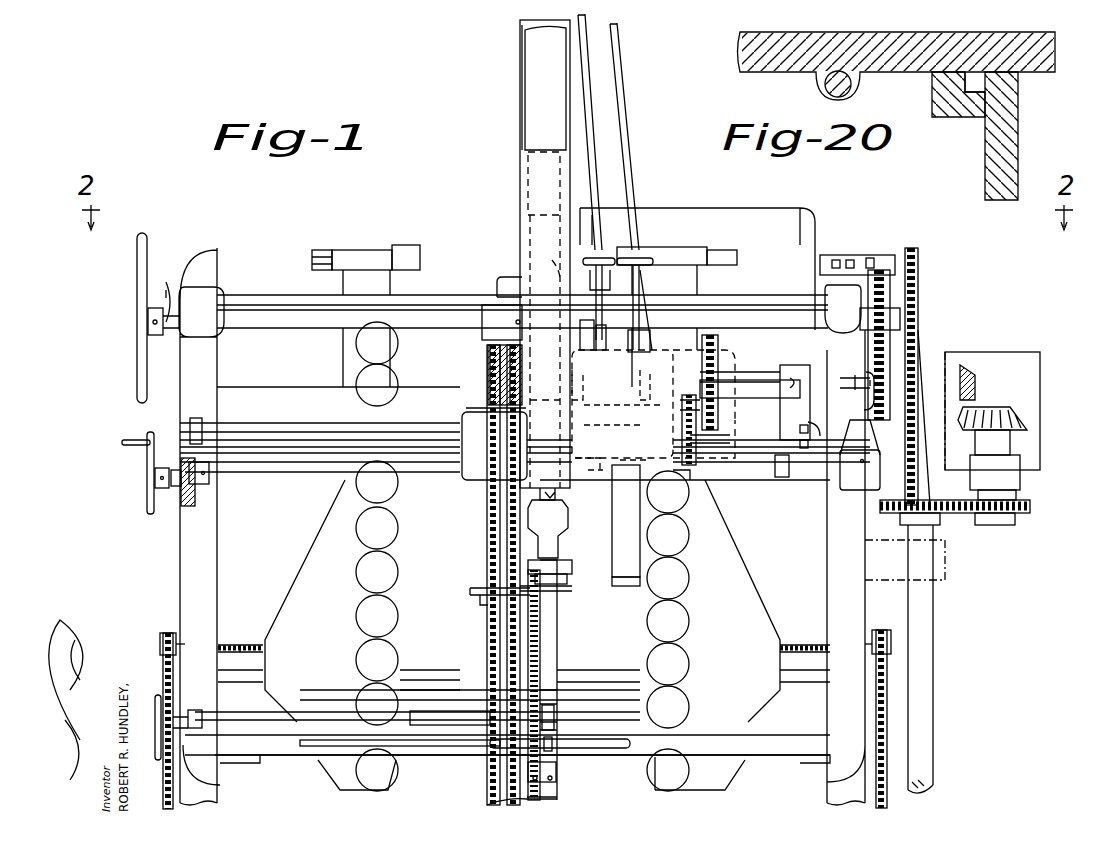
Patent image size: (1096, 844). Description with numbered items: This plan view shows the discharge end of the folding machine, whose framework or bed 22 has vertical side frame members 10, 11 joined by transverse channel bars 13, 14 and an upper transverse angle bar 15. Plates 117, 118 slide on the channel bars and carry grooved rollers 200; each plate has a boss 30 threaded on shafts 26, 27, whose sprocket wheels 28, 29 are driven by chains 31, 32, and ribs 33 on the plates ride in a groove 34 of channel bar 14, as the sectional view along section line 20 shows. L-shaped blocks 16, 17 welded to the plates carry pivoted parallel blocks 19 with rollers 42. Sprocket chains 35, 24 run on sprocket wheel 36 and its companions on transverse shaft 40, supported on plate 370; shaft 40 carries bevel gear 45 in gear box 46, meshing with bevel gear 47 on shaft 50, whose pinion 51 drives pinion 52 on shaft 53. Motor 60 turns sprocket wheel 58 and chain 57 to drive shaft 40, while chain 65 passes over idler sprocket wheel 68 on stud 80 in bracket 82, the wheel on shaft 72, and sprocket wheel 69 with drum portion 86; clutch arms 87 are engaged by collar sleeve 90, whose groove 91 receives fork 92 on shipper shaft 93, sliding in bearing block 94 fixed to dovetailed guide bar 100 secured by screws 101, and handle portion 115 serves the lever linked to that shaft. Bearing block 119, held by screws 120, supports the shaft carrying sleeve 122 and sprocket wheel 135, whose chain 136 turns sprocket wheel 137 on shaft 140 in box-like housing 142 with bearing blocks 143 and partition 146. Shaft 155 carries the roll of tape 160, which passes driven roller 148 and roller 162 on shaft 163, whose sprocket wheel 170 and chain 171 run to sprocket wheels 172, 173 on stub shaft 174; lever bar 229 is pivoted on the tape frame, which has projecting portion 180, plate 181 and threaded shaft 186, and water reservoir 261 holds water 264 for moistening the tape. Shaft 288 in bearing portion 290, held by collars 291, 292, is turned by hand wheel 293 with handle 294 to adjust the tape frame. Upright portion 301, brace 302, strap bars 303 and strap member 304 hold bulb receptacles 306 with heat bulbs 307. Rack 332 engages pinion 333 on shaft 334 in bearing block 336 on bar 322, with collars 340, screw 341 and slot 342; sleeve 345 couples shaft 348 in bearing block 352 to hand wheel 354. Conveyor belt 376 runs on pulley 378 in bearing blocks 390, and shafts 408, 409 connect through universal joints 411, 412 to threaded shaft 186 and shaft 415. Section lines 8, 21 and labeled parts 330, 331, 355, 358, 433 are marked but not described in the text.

In FIG. 1, the section line 8 is at (324, 602).
In FIG. 1, the right frame member 10 is at (868, 616).
In FIG. 1, the left frame member 11 is at (180, 564).
In FIG. 1, the section line 13 is at (402, 488).
In FIG. 1, the guide bar 14 is at (594, 668).
In FIG. 20, the guide bar 14 is at (1018, 118).
In FIG. 1, the bottom rail 15 is at (756, 760).
In FIG. 1, the bracket 16 is at (727, 250).
In FIG. 1, the bearing block 17 is at (315, 250).
In FIG. 1, the support bar 19 is at (360, 251).
In FIG. 1, the section line 20 is at (751, 611).
In FIG. 1, the section line 21 is at (773, 328).
In FIG. 1, the side plate 22 is at (820, 580).
In FIG. 1, the rack 24 is at (488, 340).
In FIG. 1, the roller 26 is at (798, 643).
In FIG. 20, the roller 26 is at (837, 76).
In FIG. 1, the rack bar 27 is at (238, 645).
In FIG. 1, the chain 28 is at (884, 636).
In FIG. 1, the chain 29 is at (158, 640).
In FIG. 20, the roller seat 30 is at (816, 98).
In FIG. 1, the chain 31 is at (887, 737).
In FIG. 1, the chain 32 is at (158, 792).
In FIG. 20, the groove 33 is at (987, 82).
In FIG. 1, the guide block 34 is at (420, 670).
In FIG. 20, the guide block 34 is at (970, 92).
In FIG. 1, the rack teeth 35 is at (510, 348).
In FIG. 1, the rack 36 is at (484, 362).
In FIG. 1, the shaft 40 is at (450, 384).
In FIG. 1, the block 42 is at (398, 246).
In FIG. 1, the bevel pinion 45 is at (972, 373).
In FIG. 1, the gear housing 46 is at (1040, 359).
In FIG. 1, the bevel gear 47 is at (994, 410).
In FIG. 1, the bearing 50 is at (1008, 466).
In FIG. 1, the hub 51 is at (1012, 516).
In FIG. 1, the gear 52 is at (904, 498).
In FIG. 1, the drive shaft 53 is at (932, 604).
In FIG. 1, the bracket 57 is at (899, 318).
In FIG. 1, the bearing housing 58 is at (867, 303).
In FIG. 1, the housing 60 is at (742, 208).
In FIG. 1, the chain 65 is at (918, 251).
In FIG. 1, the sprocket 68 is at (878, 260).
In FIG. 1, the chain run 69 is at (925, 339).
In FIG. 1, the cross bar 72 is at (300, 326).
In FIG. 1, the stop 80 is at (872, 256).
In FIG. 1, the bracket 82 is at (848, 256).
In FIG. 1, the link 86 is at (897, 453).
In FIG. 1, the arm 87 is at (860, 433).
In FIG. 1, the coupling 90 is at (854, 382).
In FIG. 1, the coupling 91 is at (866, 370).
In FIG. 1, the arm 92 is at (862, 400).
In FIG. 1, the bracket 93 is at (840, 478).
In FIG. 1, the collar 94 is at (790, 464).
In FIG. 1, the shaft 100 is at (262, 422).
In FIG. 1, the bearing 101 is at (197, 424).
In FIG. 1, the block 115 is at (664, 316).
In FIG. 1, the side plate 117 is at (736, 552).
In FIG. 20, the side plate 117 is at (1048, 50).
In FIG. 1, the side plate 118 is at (313, 544).
In FIG. 1, the block 119 is at (808, 402).
In FIG. 1, the bracket 120 is at (800, 438).
In FIG. 1, the shaft 122 is at (785, 370).
In FIG. 1, the sprocket 135 is at (716, 366).
In FIG. 1, the shaft 136 is at (750, 386).
In FIG. 1, the collar 137 is at (716, 410).
In FIG. 1, the slot 140 is at (622, 422).
In FIG. 1, the column 142 is at (526, 160).
In FIG. 1, the pin 143 is at (594, 402).
In FIG. 1, the carriage 146 is at (564, 146).
In FIG. 1, the slide 148 is at (545, 419).
In FIG. 1, the guide 155 is at (545, 282).
In FIG. 1, the pin 160 is at (556, 494).
In FIG. 1, the head 162 is at (530, 462).
In FIG. 1, the arm 163 is at (604, 460).
In FIG. 1, the roller 170 is at (689, 472).
In FIG. 1, the bracket 171 is at (692, 482).
In FIG. 1, the pin 172 is at (678, 450).
In FIG. 1, the shaft 173 is at (707, 437).
In FIG. 1, the sprocket 174 is at (678, 432).
In FIG. 1, the block 180 is at (626, 342).
In FIG. 1, the pin 181 is at (644, 342).
In FIG. 1, the lever 186 is at (648, 275).
In FIG. 1, the roller 200 is at (403, 355).
In FIG. 1, the block 229 is at (597, 341).
In FIG. 1, the pin 261 is at (466, 487).
In FIG. 1, the link 264 is at (479, 493).
In FIG. 1, the shaft 288 is at (329, 478).
In FIG. 1, the bearing 290 is at (194, 487).
In FIG. 1, the collar 291 is at (210, 484).
In FIG. 1, the collar 292 is at (167, 488).
In FIG. 1, the handwheel 293 is at (147, 492).
In FIG. 1, the handle 294 is at (130, 445).
In FIG. 1, the base 301 is at (627, 588).
In FIG. 1, the post 302 is at (620, 532).
In FIG. 1, the plate 303 is at (570, 572).
In FIG. 1, the plate 304 is at (564, 586).
In FIG. 1, the base 306 is at (568, 560).
In FIG. 1, the knob 307 is at (574, 526).
In FIG. 1, the guide 322 is at (556, 660).
In FIG. 1, the block 330 is at (556, 770).
In FIG. 1, the plate 331 is at (558, 794).
In FIG. 1, the rack 332 is at (544, 632).
In FIG. 1, the pin 333 is at (552, 697).
In FIG. 1, the rod 334 is at (400, 741).
In FIG. 1, the block 336 is at (556, 707).
In FIG. 1, the pin 340 is at (556, 724).
In FIG. 1, the rod 341 is at (584, 741).
In FIG. 1, the link 342 is at (500, 745).
In FIG. 1, the sleeve 345 is at (436, 703).
In FIG. 1, the rod 348 is at (285, 716).
In FIG. 1, the collar 352 is at (196, 712).
In FIG. 1, the lever 354 is at (155, 712).
In FIG. 1, the arm 355 is at (470, 591).
In FIG. 1, the hook 358 is at (480, 595).
In FIG. 1, the chain 370 is at (488, 525).
In FIG. 1, the cover 376 is at (526, 46).
In FIG. 1, the block 378 is at (509, 287).
In FIG. 1, the slide 390 is at (482, 318).
In FIG. 1, the rod 408 is at (592, 150).
In FIG. 1, the rod 409 is at (638, 166).
In FIG. 1, the nut 411 is at (598, 256).
In FIG. 1, the nut 412 is at (636, 243).
In FIG. 1, the bracket 415 is at (603, 288).
In FIG. 1, the cover plate 433 is at (520, 65).